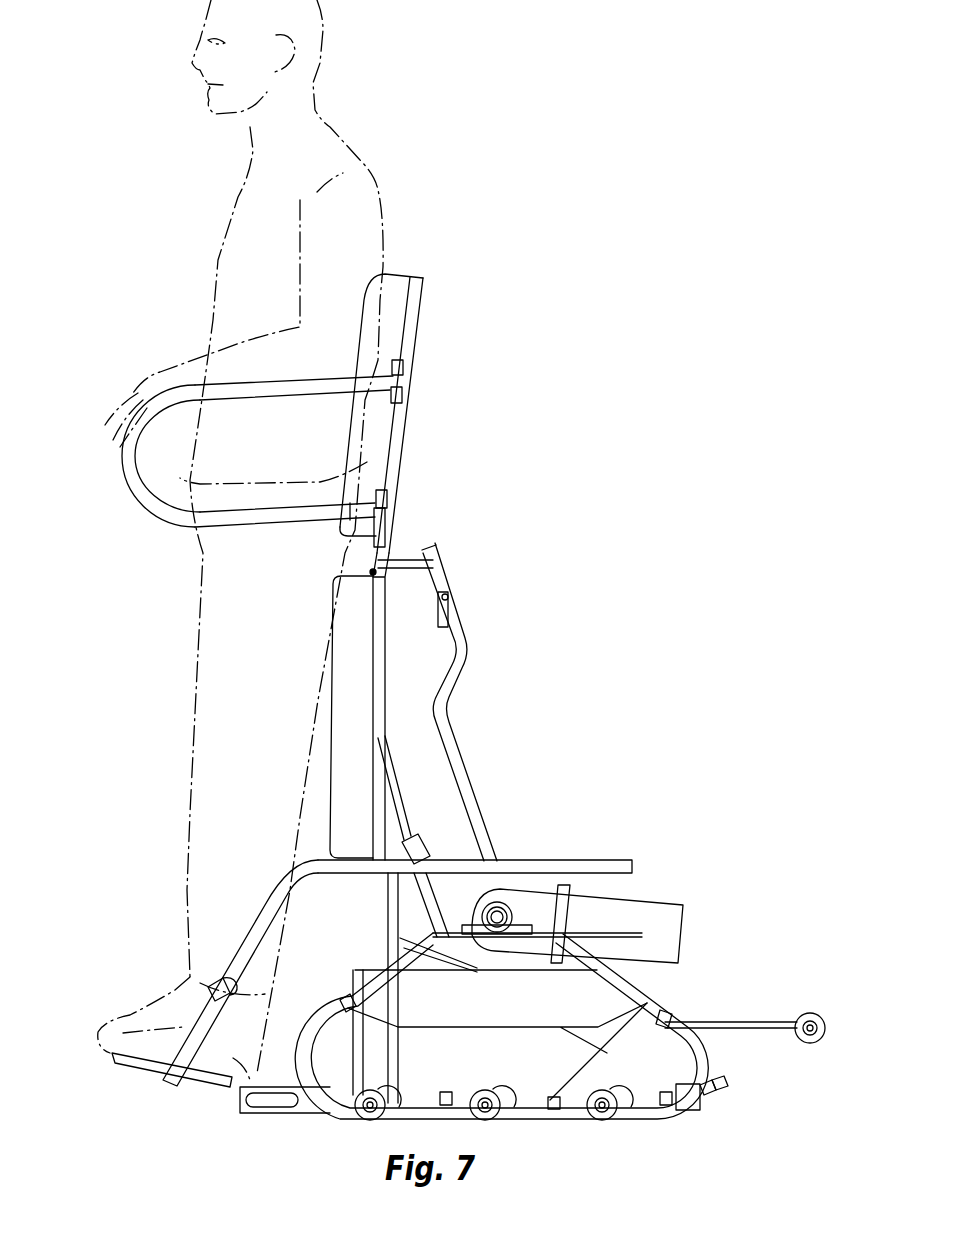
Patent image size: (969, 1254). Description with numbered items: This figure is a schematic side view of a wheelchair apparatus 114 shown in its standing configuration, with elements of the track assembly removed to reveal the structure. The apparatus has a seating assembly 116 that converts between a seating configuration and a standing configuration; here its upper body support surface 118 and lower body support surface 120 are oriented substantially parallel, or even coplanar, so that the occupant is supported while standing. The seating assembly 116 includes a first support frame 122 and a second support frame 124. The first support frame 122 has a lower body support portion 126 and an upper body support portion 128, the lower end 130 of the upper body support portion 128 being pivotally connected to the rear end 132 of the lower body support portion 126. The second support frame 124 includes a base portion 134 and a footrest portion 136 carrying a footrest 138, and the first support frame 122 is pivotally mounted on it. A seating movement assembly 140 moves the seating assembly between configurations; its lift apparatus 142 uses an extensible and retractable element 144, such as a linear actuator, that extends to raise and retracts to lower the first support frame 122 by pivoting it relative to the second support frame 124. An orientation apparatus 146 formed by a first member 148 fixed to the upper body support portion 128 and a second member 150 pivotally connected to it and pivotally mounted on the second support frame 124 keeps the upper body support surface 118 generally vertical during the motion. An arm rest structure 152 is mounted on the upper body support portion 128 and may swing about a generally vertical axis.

The wheelchair apparatus 114 is at (562, 288).
The seating assembly 116 is at (432, 458).
The upper body support surface 118 is at (365, 309).
The lower body support surface 120 is at (327, 680).
The first support frame 122 is at (395, 513).
The second support frame 124 is at (530, 860).
The lower body support portion 126 is at (378, 628).
The upper body support portion 128 is at (410, 348).
The lower end 130 is at (373, 562).
The rear end 132 is at (375, 590).
The base portion 134 is at (508, 860).
The footrest portion 136 is at (253, 932).
The footrest 138 is at (138, 1063).
The seating movement assembly 140 is at (540, 672).
The lift apparatus 142 is at (443, 819).
The extensible and retractable element 144 is at (394, 798).
The orientation apparatus 146 is at (492, 612).
The first member 148 is at (440, 550).
The second member 150 is at (460, 657).
The arm rest structure 152 is at (125, 480).